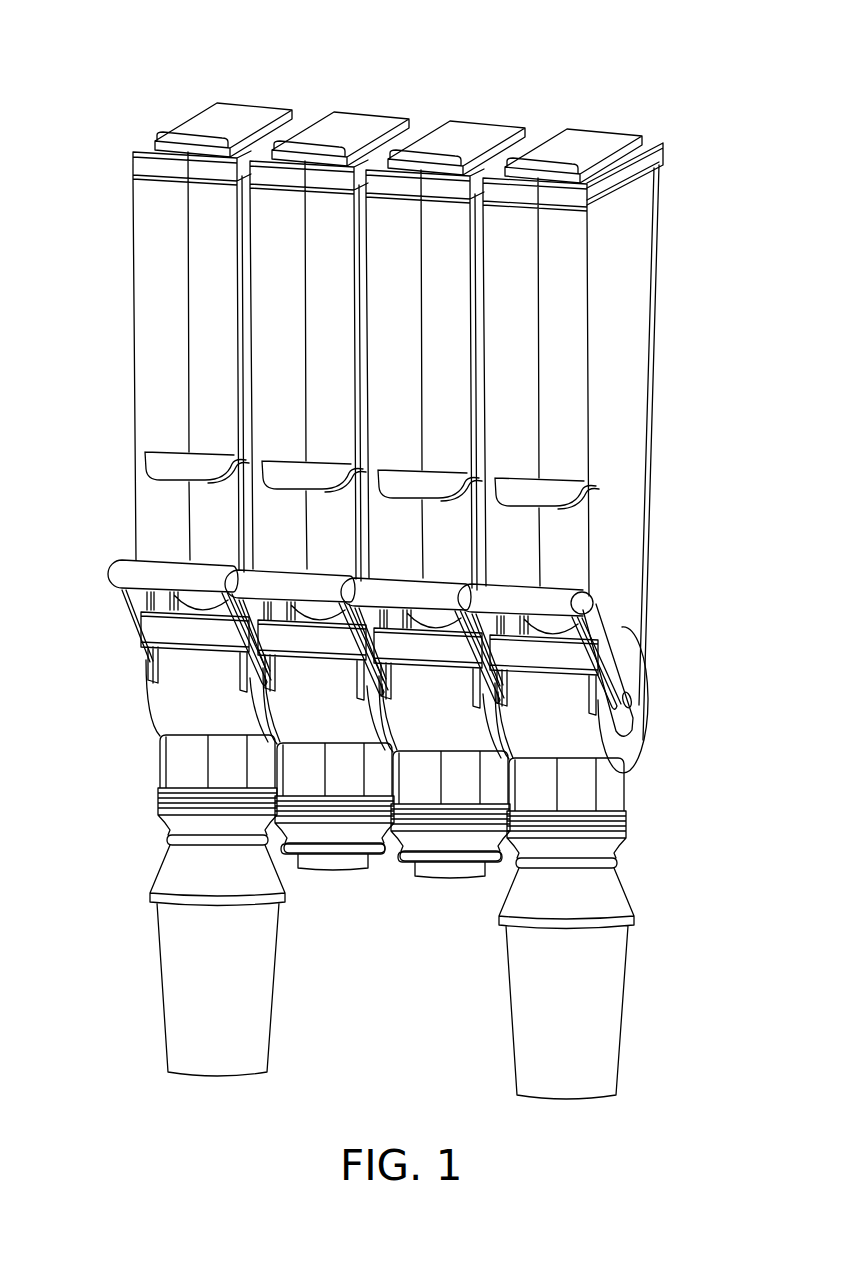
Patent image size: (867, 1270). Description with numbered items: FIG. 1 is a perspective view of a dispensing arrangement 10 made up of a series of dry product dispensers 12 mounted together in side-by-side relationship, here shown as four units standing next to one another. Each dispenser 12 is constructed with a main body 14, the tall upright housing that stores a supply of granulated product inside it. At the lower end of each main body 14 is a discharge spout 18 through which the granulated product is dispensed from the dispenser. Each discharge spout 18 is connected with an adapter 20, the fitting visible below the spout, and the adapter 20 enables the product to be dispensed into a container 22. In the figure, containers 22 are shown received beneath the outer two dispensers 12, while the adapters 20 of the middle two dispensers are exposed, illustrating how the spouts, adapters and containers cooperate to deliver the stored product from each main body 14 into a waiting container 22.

The dispensing system 10 is at (481, 61).
The dry product dispenser 12 is at (291, 323).
The main body 14 is at (653, 445).
The discharge spout 18 is at (190, 771).
The adapter 20 is at (453, 844).
The container 22 is at (185, 993).